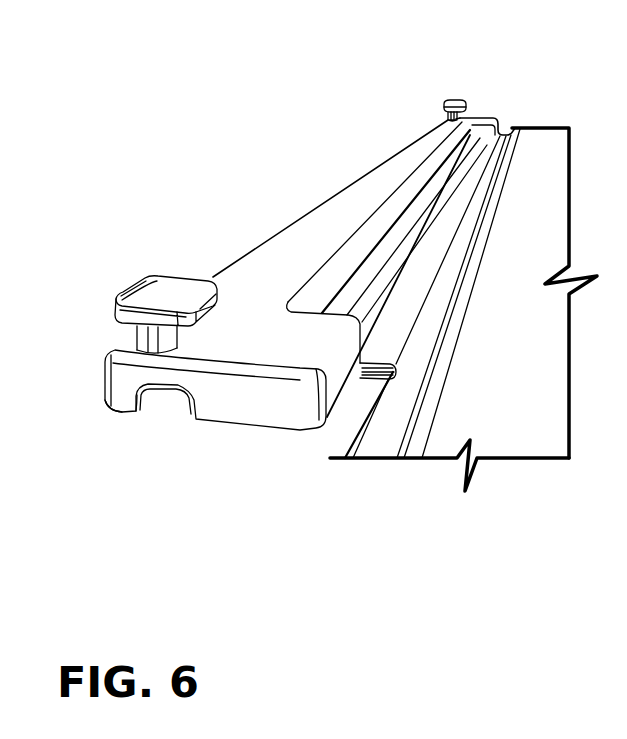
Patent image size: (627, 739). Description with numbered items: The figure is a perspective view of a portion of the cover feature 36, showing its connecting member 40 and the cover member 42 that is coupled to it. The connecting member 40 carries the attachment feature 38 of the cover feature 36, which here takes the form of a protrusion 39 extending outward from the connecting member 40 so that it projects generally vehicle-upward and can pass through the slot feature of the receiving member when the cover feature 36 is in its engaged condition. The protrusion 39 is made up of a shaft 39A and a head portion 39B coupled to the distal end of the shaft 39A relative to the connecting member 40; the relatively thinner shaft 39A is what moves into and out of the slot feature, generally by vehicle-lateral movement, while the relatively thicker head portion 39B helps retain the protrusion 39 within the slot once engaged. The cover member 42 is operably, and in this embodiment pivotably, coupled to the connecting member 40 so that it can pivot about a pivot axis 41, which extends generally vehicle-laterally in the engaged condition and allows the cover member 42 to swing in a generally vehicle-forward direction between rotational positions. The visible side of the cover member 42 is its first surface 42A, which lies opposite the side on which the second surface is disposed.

The cover feature 36 is at (426, 107).
The attachment feature 38 is at (160, 290).
The protrusion 39 is at (114, 330).
The shaft 39A is at (137, 333).
The head portion 39B is at (177, 280).
The connecting member 40 is at (325, 210).
The pivot axis 41 is at (473, 158).
The cover member 42 is at (543, 163).
The first surface 42A is at (523, 327).